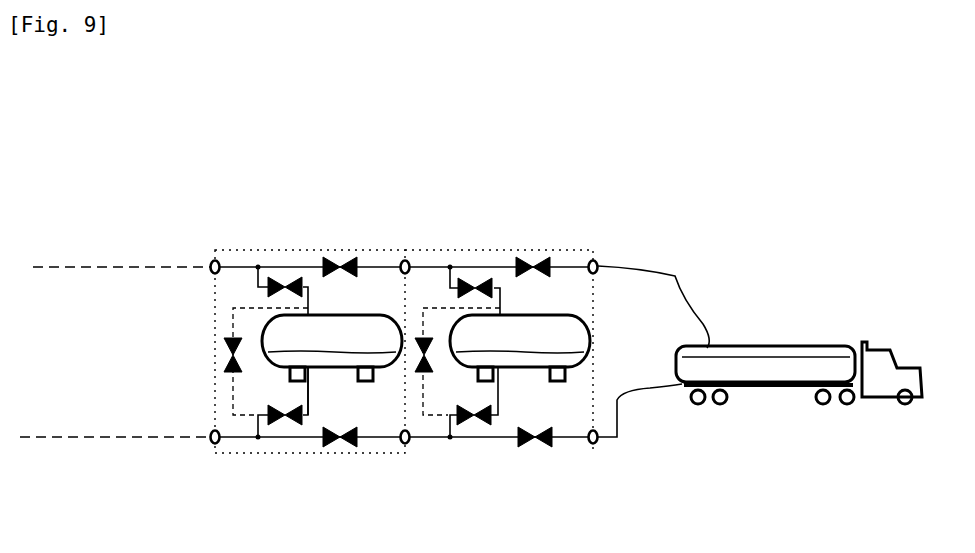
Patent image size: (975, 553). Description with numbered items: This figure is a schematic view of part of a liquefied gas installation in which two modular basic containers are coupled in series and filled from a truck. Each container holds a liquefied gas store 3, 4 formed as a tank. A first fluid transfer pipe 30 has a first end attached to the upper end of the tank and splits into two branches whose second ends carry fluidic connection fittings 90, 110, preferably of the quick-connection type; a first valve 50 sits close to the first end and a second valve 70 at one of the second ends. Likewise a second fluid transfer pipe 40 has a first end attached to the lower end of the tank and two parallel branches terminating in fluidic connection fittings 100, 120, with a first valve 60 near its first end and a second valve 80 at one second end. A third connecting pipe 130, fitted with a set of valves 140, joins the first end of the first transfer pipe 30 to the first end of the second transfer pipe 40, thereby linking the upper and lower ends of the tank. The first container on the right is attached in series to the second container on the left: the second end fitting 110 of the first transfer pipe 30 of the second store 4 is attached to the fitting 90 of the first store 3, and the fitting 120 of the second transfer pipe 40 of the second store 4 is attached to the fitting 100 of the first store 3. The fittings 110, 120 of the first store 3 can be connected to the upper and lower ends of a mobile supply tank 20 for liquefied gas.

The liquefied gas store 3 is at (555, 332).
The liquefied gas store 4 is at (357, 335).
The mobile supply tank 20 is at (798, 333).
The first fluid transfer pipe 30 is at (312, 288).
The second fluid transfer pipe 40 is at (312, 397).
The first valve 50 is at (284, 276).
The first valve 60 is at (283, 426).
The second valve 70 is at (342, 256).
The second valve 80 is at (337, 446).
The fluidic connection fitting 90 is at (211, 257).
The fluidic connection fitting 100 is at (211, 444).
The fluidic connection fitting 110 is at (406, 256).
The fluidic connection fitting 120 is at (498, 469).
The third connecting pipe 130 is at (232, 318).
The set of valves 140 is at (227, 360).